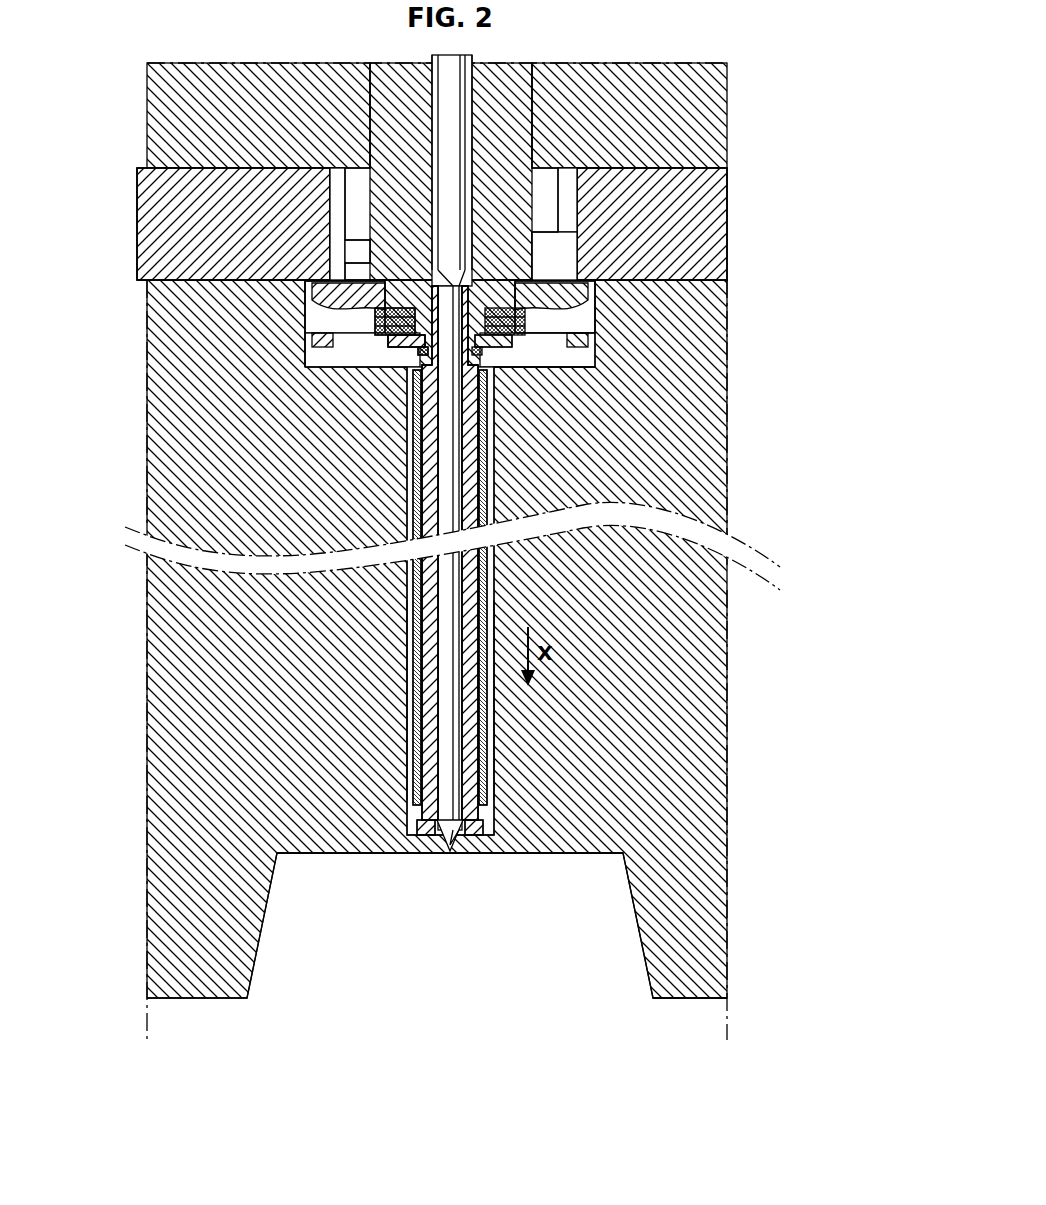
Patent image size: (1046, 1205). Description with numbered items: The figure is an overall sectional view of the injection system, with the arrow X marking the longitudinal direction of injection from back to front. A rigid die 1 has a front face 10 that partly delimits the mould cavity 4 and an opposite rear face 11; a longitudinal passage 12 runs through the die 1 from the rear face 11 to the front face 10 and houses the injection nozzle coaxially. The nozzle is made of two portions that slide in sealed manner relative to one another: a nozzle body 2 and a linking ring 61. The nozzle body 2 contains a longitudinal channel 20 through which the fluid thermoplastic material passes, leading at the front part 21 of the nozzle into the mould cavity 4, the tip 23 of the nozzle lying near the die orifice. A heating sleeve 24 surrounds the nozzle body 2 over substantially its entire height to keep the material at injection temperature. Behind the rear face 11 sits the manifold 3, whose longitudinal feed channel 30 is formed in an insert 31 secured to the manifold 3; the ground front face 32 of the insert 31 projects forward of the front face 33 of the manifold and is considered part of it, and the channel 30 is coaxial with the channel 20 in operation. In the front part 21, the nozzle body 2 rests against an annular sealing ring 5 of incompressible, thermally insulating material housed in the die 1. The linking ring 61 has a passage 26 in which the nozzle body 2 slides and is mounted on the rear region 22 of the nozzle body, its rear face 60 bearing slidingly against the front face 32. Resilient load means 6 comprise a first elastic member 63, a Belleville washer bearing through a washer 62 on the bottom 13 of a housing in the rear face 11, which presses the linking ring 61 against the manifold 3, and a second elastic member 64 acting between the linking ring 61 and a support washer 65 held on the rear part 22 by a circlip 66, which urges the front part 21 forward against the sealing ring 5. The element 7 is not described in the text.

The die 1 is at (685, 812).
The nozzle body 2 is at (492, 566).
The manifold 3 is at (466, 154).
The mould cavity 4 is at (365, 930).
The annular sealing ring 5 is at (413, 832).
The resilient load means 6 is at (278, 326).
The clamping plate 7 is at (205, 203).
The front face of the die 10 is at (705, 1000).
The rear face of the die 11 is at (217, 283).
The longitudinal passage 12 is at (490, 620).
The bottom of housing 13 is at (413, 350).
The longitudinal channel 20 is at (457, 470).
The front part of the nozzle 21 is at (510, 758).
The rear region of the nozzle body 22 is at (472, 385).
The tip of the nozzle 23 is at (450, 852).
The heating sleeve 24 is at (490, 700).
The passage of the linking ring 26 is at (443, 253).
The longitudinal feed channel 30 is at (438, 128).
The insert 31 is at (510, 128).
The front face of the insert 32 is at (370, 263).
The front face of the manifold 33 is at (700, 188).
The rear face of the linking ring 60 is at (513, 252).
The linking ring 61 is at (540, 263).
The washer 62 is at (548, 392).
The first elastic member 63 is at (592, 312).
The second elastic member 64 is at (395, 318).
The support washer 65 is at (410, 336).
The circlip 66 is at (416, 352).